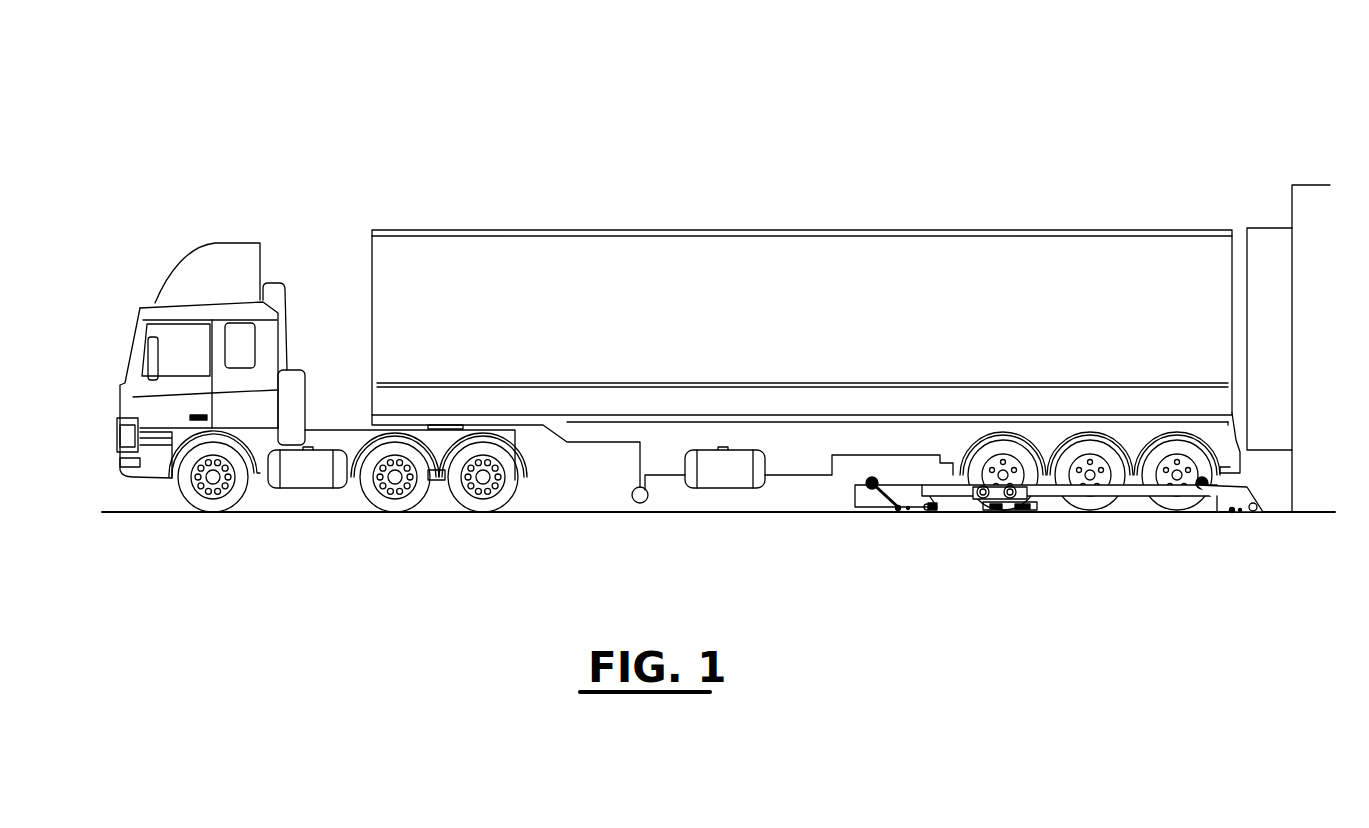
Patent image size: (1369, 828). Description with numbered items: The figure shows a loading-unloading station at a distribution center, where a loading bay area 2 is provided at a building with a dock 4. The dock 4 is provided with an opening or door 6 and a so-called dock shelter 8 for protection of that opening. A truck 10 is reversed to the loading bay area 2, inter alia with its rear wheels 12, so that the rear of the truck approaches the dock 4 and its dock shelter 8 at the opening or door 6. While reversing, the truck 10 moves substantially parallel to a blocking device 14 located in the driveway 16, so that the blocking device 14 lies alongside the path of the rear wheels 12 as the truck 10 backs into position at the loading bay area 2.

The loading bay area 2 is at (960, 138).
The dock 4 is at (1308, 197).
The opening or door 6 is at (1260, 137).
The dock shelter 8 is at (1270, 242).
The truck 10 is at (695, 252).
The rear wheels 12 is at (1003, 447).
The blocking device 14 is at (890, 545).
The driveway 16 is at (100, 482).